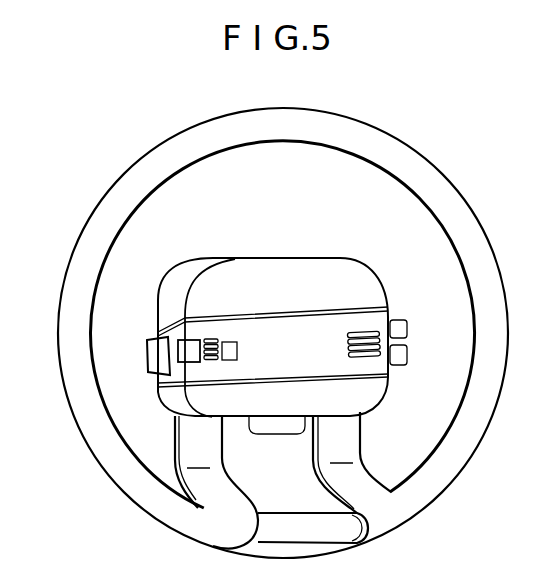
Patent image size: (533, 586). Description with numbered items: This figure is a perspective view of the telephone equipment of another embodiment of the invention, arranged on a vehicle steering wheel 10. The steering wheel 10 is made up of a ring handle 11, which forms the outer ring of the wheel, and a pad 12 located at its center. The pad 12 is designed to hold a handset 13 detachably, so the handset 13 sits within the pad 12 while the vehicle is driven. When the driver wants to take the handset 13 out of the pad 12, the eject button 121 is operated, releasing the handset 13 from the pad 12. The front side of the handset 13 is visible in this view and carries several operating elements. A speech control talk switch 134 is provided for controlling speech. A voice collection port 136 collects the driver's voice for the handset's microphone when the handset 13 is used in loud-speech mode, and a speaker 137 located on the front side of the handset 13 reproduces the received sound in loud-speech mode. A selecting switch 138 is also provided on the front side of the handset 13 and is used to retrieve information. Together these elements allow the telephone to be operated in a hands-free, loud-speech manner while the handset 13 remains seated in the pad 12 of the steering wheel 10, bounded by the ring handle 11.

The steering wheel 10 is at (436, 160).
The ring handle 11 is at (463, 190).
The pad 12 is at (321, 257).
The handset 13 is at (380, 318).
The eject button 121 is at (261, 435).
The speech control talk switch 134 is at (145, 348).
The voice collection port 136 is at (208, 361).
The speaker 137 is at (368, 358).
The selecting switch 138 is at (188, 363).